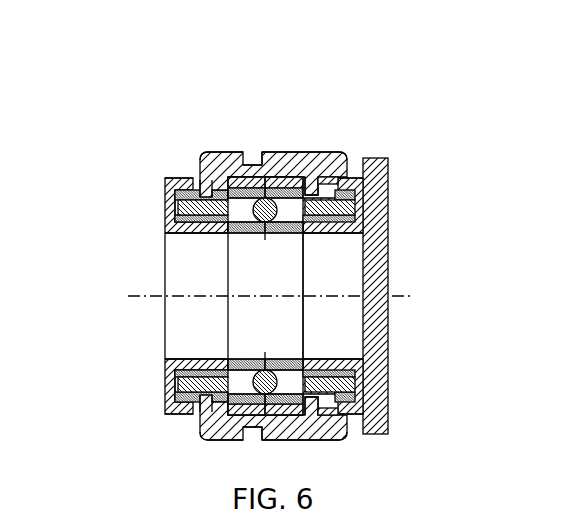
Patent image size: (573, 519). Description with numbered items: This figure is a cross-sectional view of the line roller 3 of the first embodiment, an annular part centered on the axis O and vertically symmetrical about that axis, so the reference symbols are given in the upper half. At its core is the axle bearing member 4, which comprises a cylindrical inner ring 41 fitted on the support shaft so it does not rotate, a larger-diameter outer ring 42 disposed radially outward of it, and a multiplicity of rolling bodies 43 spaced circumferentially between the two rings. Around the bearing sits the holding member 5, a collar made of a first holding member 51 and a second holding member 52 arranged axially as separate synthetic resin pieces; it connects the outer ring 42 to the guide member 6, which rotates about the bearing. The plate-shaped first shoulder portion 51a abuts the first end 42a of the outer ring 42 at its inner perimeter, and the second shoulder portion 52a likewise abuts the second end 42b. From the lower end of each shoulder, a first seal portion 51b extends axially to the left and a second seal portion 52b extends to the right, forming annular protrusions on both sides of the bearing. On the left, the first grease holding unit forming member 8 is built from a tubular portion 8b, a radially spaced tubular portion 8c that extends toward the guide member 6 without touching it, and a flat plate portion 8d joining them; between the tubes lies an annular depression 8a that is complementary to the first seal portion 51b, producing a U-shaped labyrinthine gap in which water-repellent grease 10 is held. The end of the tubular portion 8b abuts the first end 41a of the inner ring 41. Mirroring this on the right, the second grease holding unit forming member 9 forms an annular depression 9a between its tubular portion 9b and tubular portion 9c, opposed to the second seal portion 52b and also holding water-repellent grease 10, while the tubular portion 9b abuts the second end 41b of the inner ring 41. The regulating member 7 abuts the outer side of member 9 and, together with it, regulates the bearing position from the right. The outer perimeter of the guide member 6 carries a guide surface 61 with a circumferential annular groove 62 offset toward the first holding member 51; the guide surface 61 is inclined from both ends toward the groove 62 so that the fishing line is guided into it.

The line roller 3 is at (343, 65).
The axle bearing member 4 is at (256, 268).
The holding member 5 is at (360, 160).
The guide member 6 is at (336, 165).
The regulating member 7 is at (390, 162).
The first grease holding unit forming member 8 is at (167, 198).
The annular depression 8a is at (187, 228).
The tubular portion 8b is at (205, 236).
The tubular portion 8c is at (177, 176).
The flat plate portion 8d is at (180, 218).
The second grease holding unit forming member 9 is at (385, 200).
The annular depression 9a is at (355, 219).
The tubular portion 9b is at (360, 236).
The tubular portion 9c is at (392, 168).
The water-repellent grease 10 is at (167, 211).
The inner ring 41 is at (281, 238).
The first end of the inner ring 41a is at (222, 237).
The second end of the inner ring 41b is at (302, 236).
The outer ring 42 is at (248, 237).
The first end of the outer ring 42a is at (220, 182).
The second end of the outer ring 42b is at (300, 178).
The rolling body 43 is at (266, 224).
The first holding member 51 is at (238, 170).
The first shoulder portion 51a is at (198, 163).
The first seal portion 51b is at (167, 193).
The second holding member 52 is at (268, 160).
The second shoulder portion 52a is at (310, 168).
The second seal portion 52b is at (350, 195).
The guide surface 61 is at (283, 152).
The annular groove 62 is at (255, 162).